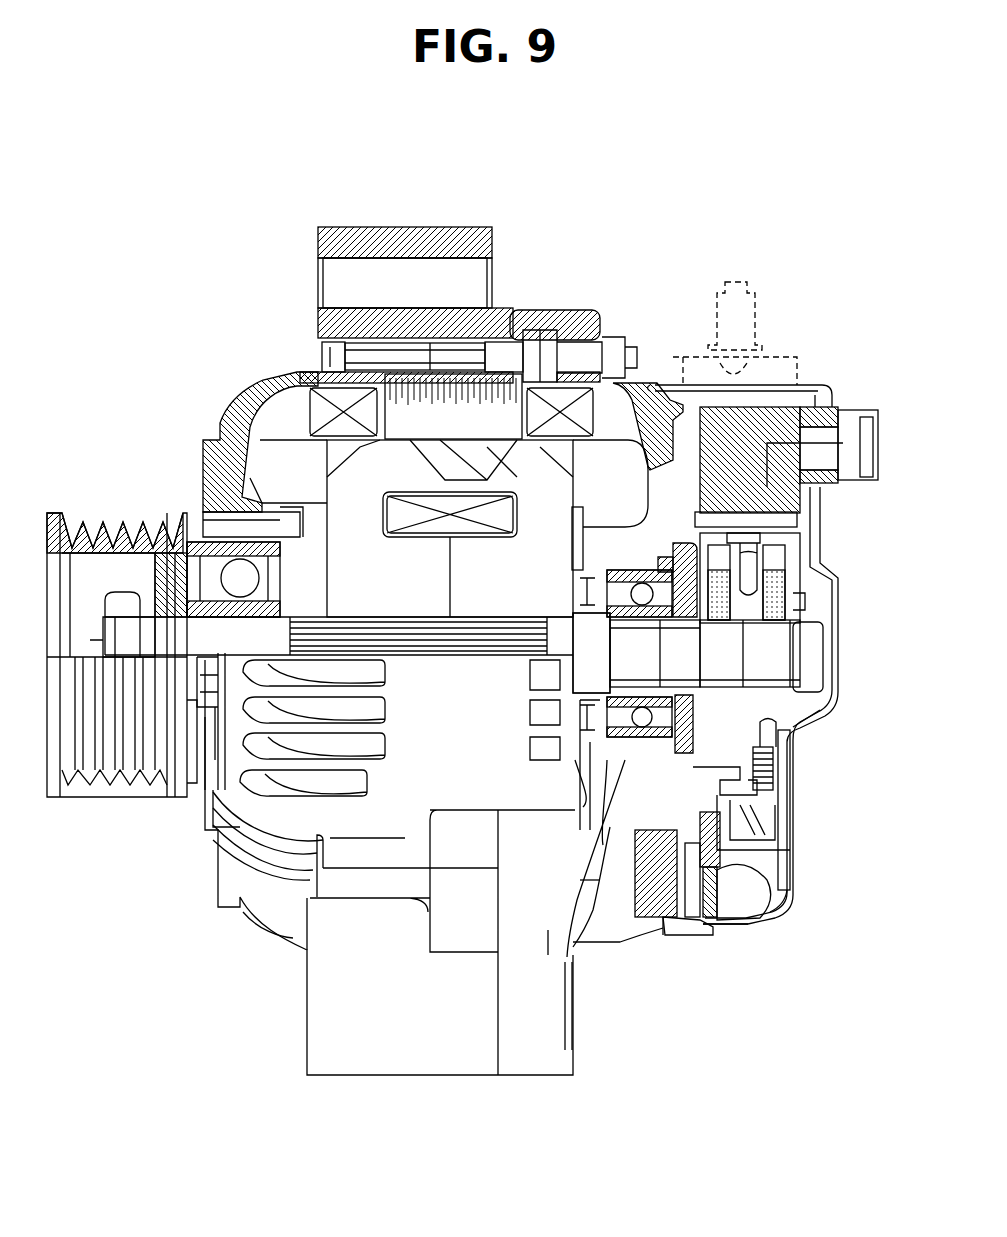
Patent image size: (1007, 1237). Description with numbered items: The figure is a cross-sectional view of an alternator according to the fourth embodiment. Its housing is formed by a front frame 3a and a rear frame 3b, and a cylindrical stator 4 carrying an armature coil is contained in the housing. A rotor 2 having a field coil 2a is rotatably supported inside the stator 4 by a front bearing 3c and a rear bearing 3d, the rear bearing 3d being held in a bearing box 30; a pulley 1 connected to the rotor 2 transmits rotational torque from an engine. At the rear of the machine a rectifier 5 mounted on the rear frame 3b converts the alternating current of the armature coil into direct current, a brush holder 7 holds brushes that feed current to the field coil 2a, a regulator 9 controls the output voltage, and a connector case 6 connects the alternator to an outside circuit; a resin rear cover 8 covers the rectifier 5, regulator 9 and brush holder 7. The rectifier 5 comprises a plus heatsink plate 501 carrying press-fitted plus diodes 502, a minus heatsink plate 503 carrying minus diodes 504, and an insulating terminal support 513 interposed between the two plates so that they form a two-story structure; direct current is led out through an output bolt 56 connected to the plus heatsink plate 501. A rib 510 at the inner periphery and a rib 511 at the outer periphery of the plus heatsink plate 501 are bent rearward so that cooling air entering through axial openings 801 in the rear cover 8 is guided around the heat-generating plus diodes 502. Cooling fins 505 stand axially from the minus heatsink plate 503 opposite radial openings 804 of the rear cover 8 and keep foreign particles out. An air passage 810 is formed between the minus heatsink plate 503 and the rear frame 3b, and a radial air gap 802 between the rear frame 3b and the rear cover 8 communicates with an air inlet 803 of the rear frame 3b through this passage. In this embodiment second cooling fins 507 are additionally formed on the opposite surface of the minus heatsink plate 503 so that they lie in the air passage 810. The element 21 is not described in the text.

The pulley 1 is at (103, 525).
The rotor 2 is at (225, 425).
The field coil 2a is at (340, 477).
The front frame 3a is at (500, 318).
The rear frame 3b is at (573, 318).
The bearing 3c is at (237, 570).
The rear bearing 3d is at (636, 556).
The stator 4 is at (452, 424).
The rectifier 5 is at (835, 708).
The connector case 6 is at (840, 395).
The brush holder 7 is at (790, 553).
The rear cover 8 is at (740, 871).
The regulator 9 is at (782, 522).
The rear fan boss 21 is at (593, 820).
The bearing box 30 is at (620, 572).
The output bolt 56 is at (757, 310).
The plus heatsink plate 501 is at (775, 815).
The plus diodes 502 is at (750, 777).
The minus heatsink plate 503 is at (690, 920).
The minus diodes 504 is at (718, 870).
The cooling fins 505 is at (742, 897).
The second cooling fins 507 is at (693, 870).
The rib 510 is at (793, 727).
The rib 511 is at (790, 890).
The terminal support 513 is at (760, 800).
The axial openings 801 is at (790, 767).
The radial air gap 802 is at (678, 935).
The air inlet 803 is at (590, 805).
The radial openings 804 is at (757, 927).
The air passage 810 is at (718, 870).